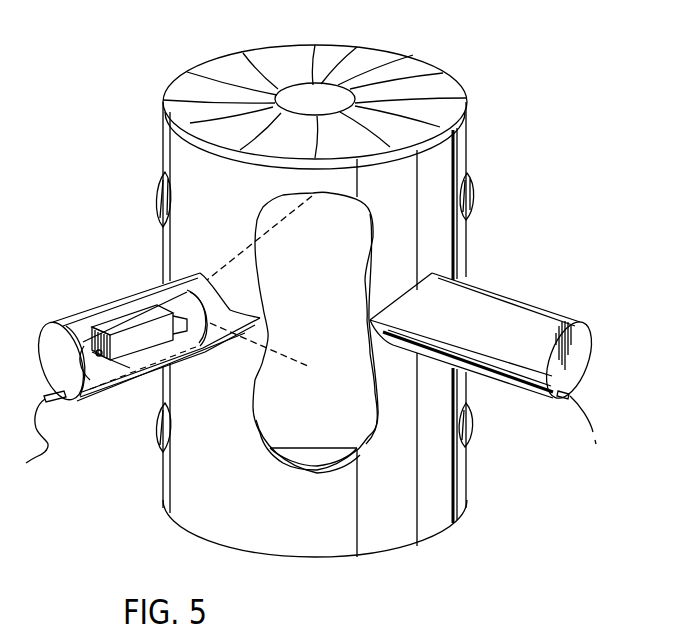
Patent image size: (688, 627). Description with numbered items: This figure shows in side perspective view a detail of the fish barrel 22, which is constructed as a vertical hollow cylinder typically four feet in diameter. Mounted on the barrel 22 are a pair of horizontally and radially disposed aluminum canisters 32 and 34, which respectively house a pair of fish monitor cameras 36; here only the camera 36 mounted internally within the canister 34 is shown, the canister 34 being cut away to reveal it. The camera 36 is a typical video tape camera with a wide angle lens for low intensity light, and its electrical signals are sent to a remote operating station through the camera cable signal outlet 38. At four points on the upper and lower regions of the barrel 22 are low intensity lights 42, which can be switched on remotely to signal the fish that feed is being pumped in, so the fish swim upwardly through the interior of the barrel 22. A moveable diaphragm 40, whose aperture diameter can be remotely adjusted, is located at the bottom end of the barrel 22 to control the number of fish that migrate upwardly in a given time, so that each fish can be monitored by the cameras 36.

The fish barrel 22 is at (467, 250).
The aluminum canister 32 is at (513, 312).
The aluminum canister 34 is at (87, 310).
The fish monitor camera 36 is at (127, 347).
The camera cable signal outlet 38 is at (50, 447).
The moveable diaphragm 40 is at (316, 97).
The low intensity light 42 is at (158, 190).